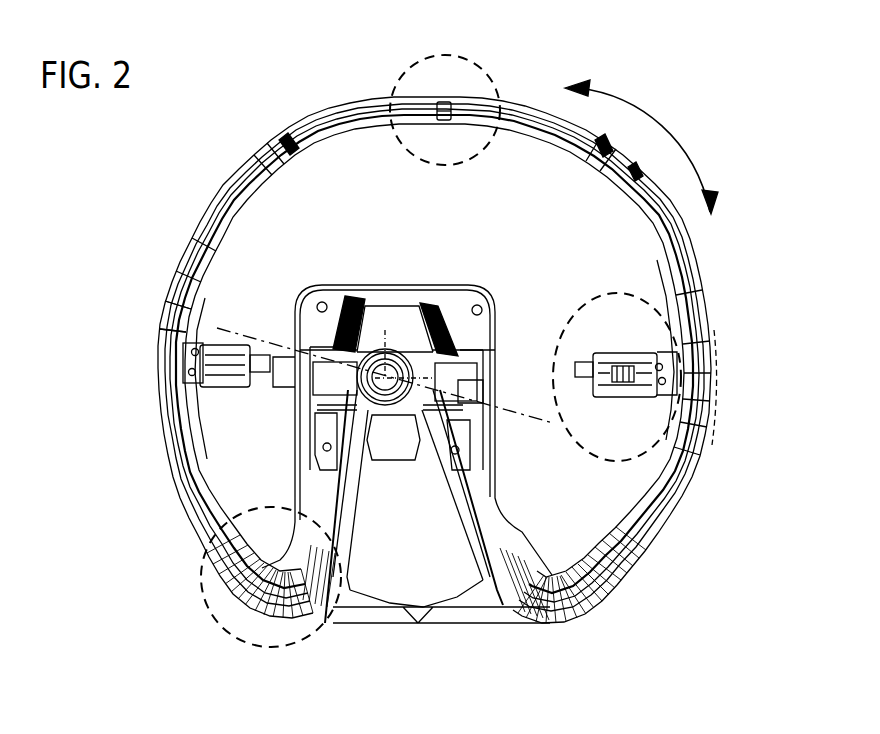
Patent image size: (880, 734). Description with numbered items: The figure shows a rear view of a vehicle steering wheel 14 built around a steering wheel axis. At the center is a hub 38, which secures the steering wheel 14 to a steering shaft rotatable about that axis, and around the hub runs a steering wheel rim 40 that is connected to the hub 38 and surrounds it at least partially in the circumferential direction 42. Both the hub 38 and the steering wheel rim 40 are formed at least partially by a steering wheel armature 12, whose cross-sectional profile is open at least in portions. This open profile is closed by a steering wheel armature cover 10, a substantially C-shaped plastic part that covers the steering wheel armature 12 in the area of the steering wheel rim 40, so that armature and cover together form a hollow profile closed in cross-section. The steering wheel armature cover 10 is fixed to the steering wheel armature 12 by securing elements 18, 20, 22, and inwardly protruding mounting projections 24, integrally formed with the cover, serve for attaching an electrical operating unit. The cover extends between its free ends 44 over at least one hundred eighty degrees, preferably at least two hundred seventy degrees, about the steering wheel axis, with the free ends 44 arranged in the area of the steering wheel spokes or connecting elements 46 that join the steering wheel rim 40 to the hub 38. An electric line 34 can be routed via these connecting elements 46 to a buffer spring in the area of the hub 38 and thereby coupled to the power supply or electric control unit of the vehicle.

The steering wheel armature cover 10 is at (700, 280).
The steering wheel armature 12 is at (660, 537).
The steering wheel 14 is at (544, 95).
The securing element 18 is at (288, 150).
The securing element 20 is at (498, 594).
The securing element 22 is at (598, 355).
The mounting projection 24 is at (616, 404).
The electric line 34 is at (297, 388).
The hub 38 is at (390, 320).
The steering wheel rim 40 is at (205, 185).
The circumferential direction 42 is at (657, 120).
The free ends 44 is at (353, 558).
The connecting elements 46 is at (303, 482).